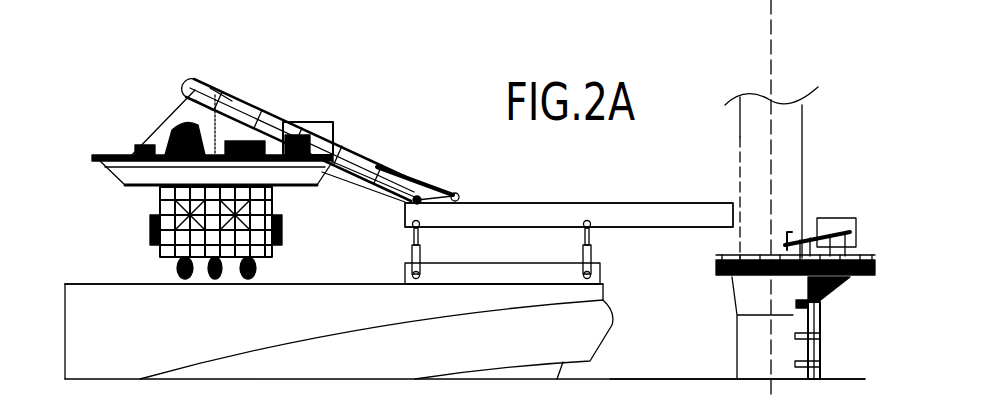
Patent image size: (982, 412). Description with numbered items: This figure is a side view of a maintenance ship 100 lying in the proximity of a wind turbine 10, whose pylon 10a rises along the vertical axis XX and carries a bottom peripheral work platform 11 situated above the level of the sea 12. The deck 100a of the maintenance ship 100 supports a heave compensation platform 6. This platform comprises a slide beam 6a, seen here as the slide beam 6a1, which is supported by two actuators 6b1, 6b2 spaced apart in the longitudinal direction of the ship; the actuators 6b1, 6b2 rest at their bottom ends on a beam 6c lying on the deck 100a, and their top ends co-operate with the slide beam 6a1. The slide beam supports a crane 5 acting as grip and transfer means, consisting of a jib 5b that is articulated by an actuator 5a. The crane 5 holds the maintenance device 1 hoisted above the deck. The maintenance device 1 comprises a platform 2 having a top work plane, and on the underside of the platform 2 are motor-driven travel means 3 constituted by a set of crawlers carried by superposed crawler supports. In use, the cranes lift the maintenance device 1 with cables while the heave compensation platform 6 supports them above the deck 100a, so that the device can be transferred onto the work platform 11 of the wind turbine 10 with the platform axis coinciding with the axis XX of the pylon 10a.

The maintenance device 1 is at (23, 185).
The platform 2 is at (98, 172).
The motor-driven travel means 3 is at (152, 223).
The crane 5 is at (310, 78).
The actuator 5a is at (415, 173).
The jib 5b is at (290, 122).
The heave compensation platform 6 is at (658, 163).
The slide beam 6a is at (537, 222).
The slide beam 6a1 is at (569, 196).
The actuator 6b1 is at (592, 250).
The actuator 6b2 is at (422, 250).
The beam 6c is at (512, 273).
The wind turbine 10 is at (726, 127).
The pylon 10a is at (780, 128).
The bottom peripheral work platform 11 is at (848, 278).
The sea 12 is at (664, 379).
The maintenance ship 100 is at (115, 322).
The deck 100a is at (303, 284).
The axis of the pylon XX is at (772, 4).